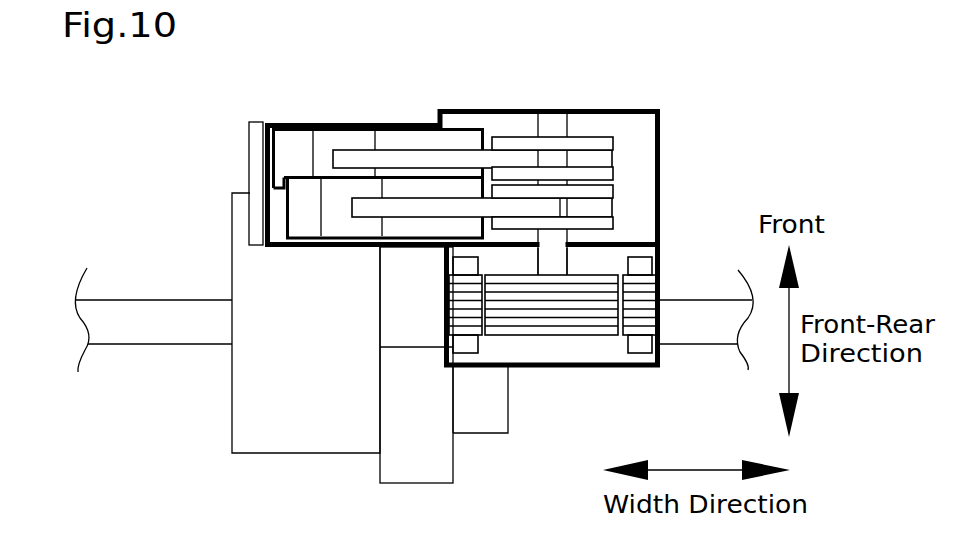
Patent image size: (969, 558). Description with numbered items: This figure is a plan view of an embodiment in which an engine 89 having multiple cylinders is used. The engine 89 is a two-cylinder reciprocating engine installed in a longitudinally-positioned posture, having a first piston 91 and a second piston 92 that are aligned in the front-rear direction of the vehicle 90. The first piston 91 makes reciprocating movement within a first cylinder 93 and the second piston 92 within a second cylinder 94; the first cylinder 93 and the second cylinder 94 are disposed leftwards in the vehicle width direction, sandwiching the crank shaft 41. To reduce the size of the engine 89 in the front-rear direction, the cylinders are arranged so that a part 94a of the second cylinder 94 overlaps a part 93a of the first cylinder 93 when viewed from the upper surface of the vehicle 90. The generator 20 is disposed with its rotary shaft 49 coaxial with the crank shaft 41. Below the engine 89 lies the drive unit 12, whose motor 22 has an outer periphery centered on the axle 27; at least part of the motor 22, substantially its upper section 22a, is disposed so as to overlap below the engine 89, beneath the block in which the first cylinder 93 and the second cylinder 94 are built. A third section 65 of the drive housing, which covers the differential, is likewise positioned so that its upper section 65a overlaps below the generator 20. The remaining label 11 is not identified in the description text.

The drive device 11 is at (697, 217).
The drive unit 12 is at (190, 357).
The generator 20 is at (623, 362).
The motor 22 is at (243, 393).
The upper section 22a is at (277, 258).
The axle 27 is at (168, 318).
The crank shaft 41 is at (553, 122).
The rotary shaft 49 is at (555, 265).
The third section 65 is at (503, 420).
The upper section 65a is at (492, 377).
The engine 89 is at (640, 150).
The vehicle 90 is at (233, 128).
The first piston 91 is at (328, 140).
The second piston 92 is at (343, 225).
The first cylinder 93 is at (298, 142).
The part of first cylinder 93a is at (280, 187).
The second cylinder 94 is at (298, 230).
The part of second cylinder 94a is at (296, 178).